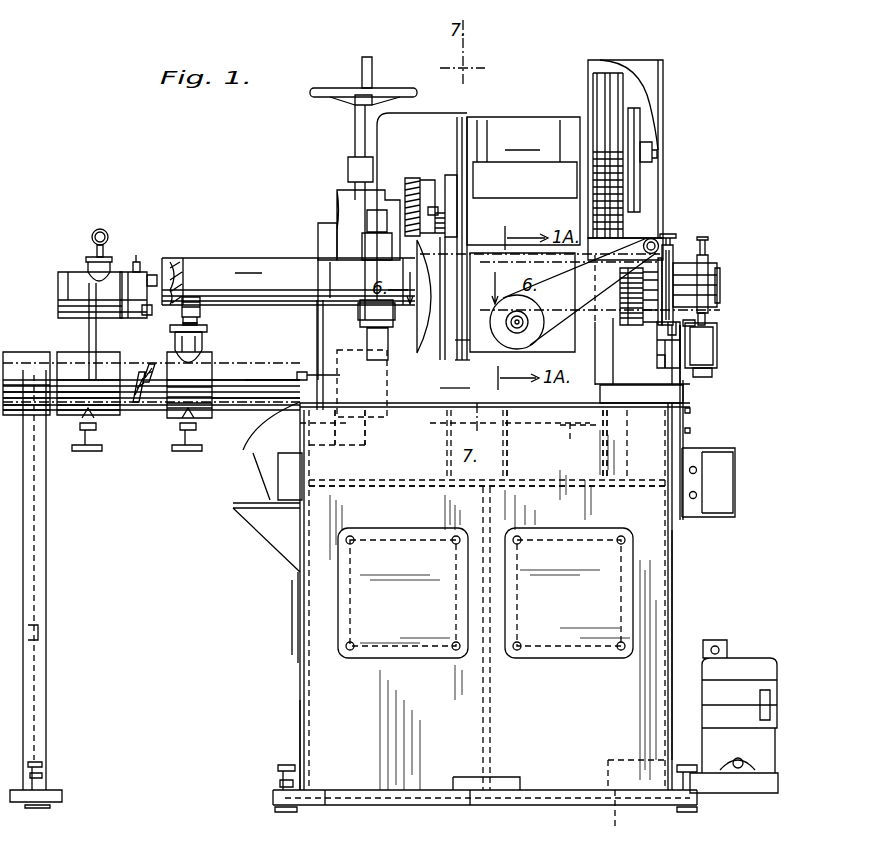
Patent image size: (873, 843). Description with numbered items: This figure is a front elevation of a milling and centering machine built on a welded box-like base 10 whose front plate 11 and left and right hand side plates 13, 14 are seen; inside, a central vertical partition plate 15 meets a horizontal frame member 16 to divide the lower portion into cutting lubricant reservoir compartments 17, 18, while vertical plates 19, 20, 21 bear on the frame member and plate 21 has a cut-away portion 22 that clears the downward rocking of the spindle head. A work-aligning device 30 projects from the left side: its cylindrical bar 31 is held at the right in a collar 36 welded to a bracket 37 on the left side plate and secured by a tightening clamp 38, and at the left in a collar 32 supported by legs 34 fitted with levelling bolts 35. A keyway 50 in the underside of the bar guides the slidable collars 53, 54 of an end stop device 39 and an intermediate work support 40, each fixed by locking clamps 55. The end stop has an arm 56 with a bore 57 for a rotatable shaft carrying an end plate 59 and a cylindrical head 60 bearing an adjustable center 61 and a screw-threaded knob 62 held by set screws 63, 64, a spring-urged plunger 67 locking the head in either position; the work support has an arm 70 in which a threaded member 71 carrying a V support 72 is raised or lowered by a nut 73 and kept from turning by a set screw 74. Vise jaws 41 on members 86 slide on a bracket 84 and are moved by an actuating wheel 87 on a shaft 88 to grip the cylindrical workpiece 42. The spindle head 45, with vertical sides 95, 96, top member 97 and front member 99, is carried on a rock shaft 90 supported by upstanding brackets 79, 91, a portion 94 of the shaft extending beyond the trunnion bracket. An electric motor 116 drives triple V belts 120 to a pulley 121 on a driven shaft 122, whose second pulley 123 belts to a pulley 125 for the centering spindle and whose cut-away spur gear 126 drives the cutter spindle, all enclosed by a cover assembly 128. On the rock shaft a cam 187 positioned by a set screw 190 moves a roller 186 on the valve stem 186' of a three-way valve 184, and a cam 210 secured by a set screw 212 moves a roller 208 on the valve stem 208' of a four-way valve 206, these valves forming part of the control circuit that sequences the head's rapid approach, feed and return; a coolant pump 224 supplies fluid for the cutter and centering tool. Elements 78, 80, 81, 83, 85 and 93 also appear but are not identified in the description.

The base 10 is at (290, 708).
The front plate 11 is at (300, 740).
The left hand side plate 13 is at (300, 620).
The right hand side plate 14 is at (672, 590).
The central vertical partition plate 15 is at (482, 700).
The horizontal frame member 16 is at (560, 488).
The cutting lubricant reservoir compartment 17 is at (360, 773).
The cutting lubricant reservoir compartment 18 is at (632, 801).
The vertical plate 19 is at (445, 428).
The vertical plate 20 is at (605, 445).
The vertical plate 21 is at (527, 440).
The cut-away portion 22 is at (570, 440).
The work-aligning device 30 is at (141, 441).
The cylindrical bar 31 is at (253, 370).
The collar 32 is at (12, 352).
The legs 34 is at (48, 576).
The levelling bolts 35 is at (40, 783).
The collar 36 is at (298, 375).
The bracket 37 is at (250, 452).
The tightening clamp 38 is at (320, 350).
The end stop device 39 is at (121, 250).
The intermediate work support 40 is at (215, 343).
The vise jaws 41 is at (330, 252).
The workpiece 42 is at (240, 258).
The spindle head 45 is at (516, 105).
The keyway 50 is at (243, 410).
The collar 53 is at (108, 413).
The collar 54 is at (172, 421).
The locking clamps 55 is at (85, 446).
The arm 56 is at (78, 320).
The bore 57 is at (84, 272).
The end plate 59 is at (58, 283).
The cylindrical head 60 is at (130, 319).
The adjustable center 61 is at (153, 274).
The screw-threaded knob 62 is at (150, 316).
The set screw 63 is at (136, 253).
The set screw 64 is at (143, 373).
The spring-urged plunger 67 is at (103, 229).
The arm 70 is at (203, 347).
The threaded member 71 is at (205, 327).
The V support 72 is at (190, 310).
The nut 73 is at (218, 316).
The set screw 74 is at (189, 377).
The guide 78 is at (322, 228).
The upstanding bracket 79 is at (452, 364).
The member 80 is at (452, 345).
The member 81 is at (445, 388).
The slide 83 is at (388, 376).
The bracket 84 is at (345, 205).
The block 85 is at (400, 330).
The members 86 is at (378, 210).
The actuating wheel 87 is at (333, 88).
The shaft 88 is at (350, 160).
The rock shaft 90 is at (722, 285).
The trunnion bracket 91 is at (600, 380).
The bracket 93 is at (672, 394).
The shaft portion 94 is at (709, 268).
The vertical side 95 is at (458, 128).
The vertical side 96 is at (580, 190).
The top member 97 is at (540, 117).
The front member 99 is at (522, 141).
The electric motor 116 is at (415, 120).
The triple V belts 120 is at (612, 73).
The pulley 121 is at (628, 97).
The driven shaft 122 is at (658, 155).
The second pulley 123 is at (642, 132).
The pulley 125 is at (668, 250).
The spur gear 126 is at (530, 325).
The cover assembly 128 is at (648, 68).
The two-position three-way valve 184 is at (704, 362).
The roller 186 is at (651, 345).
The valve stem 186' is at (641, 362).
The cam 187 is at (688, 268).
The set screw 190 is at (668, 232).
The two-position four-way valve 206 is at (712, 342).
The roller 208 is at (732, 310).
The valve stem 208' is at (724, 324).
The cam 210 is at (721, 276).
The set screw 212 is at (708, 246).
The coolant pump 224 is at (740, 662).